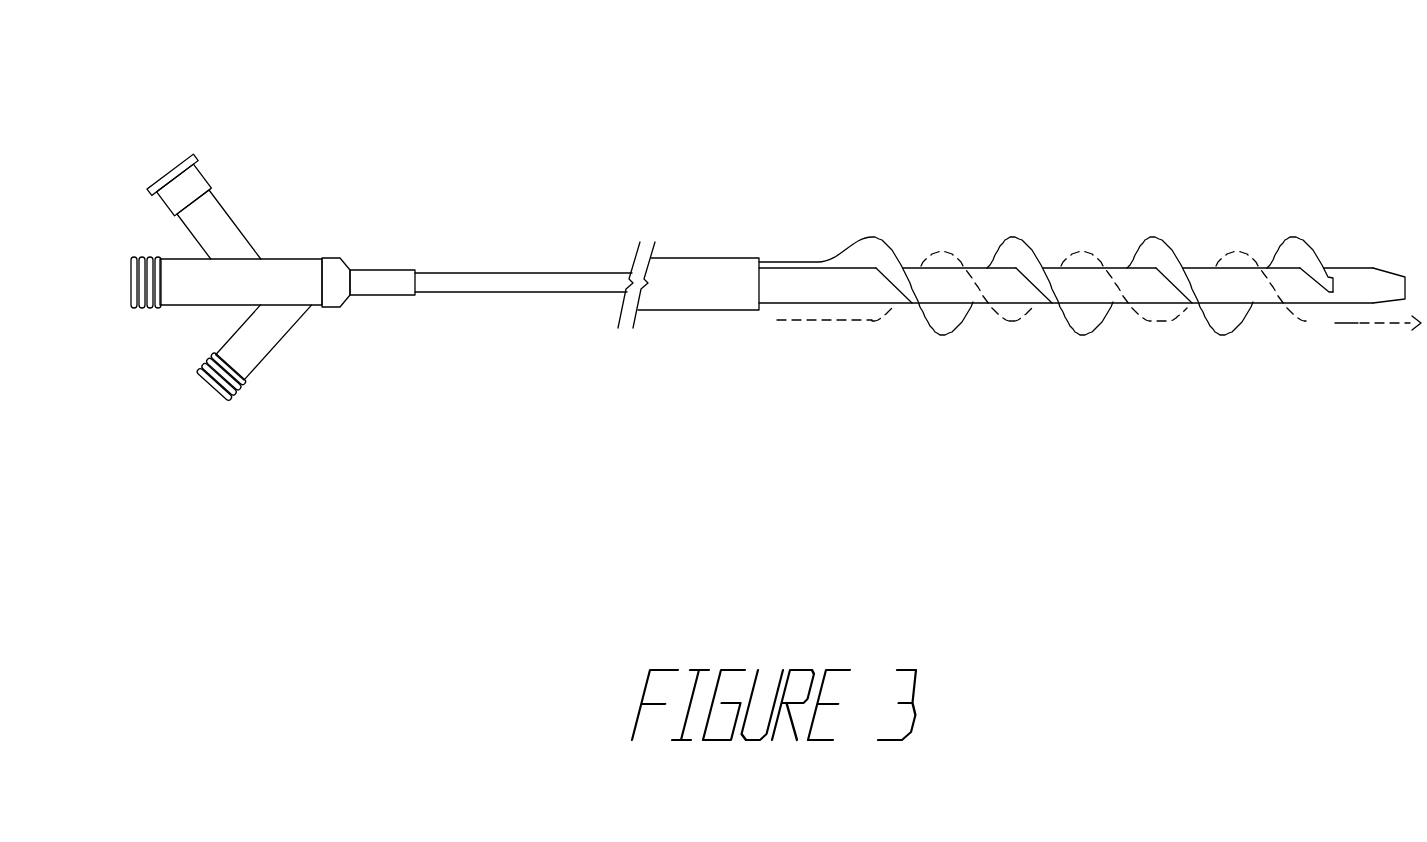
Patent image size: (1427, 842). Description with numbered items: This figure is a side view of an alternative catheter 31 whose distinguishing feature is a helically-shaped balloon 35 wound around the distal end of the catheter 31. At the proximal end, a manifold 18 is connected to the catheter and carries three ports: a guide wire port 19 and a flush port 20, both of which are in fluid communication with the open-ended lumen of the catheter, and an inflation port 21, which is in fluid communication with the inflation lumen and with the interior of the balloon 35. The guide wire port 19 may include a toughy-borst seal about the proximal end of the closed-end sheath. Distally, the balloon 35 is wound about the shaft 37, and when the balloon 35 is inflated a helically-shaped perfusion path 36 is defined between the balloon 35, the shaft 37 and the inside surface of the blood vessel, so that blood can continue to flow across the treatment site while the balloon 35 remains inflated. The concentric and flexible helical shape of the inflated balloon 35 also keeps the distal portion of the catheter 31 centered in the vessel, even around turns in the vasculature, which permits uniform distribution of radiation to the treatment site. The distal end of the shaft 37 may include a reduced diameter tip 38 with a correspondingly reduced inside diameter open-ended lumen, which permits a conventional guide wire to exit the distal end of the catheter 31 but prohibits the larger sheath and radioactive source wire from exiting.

The manifold 18 is at (381, 276).
The guide wire port 19 is at (170, 307).
The flush port 20 is at (216, 205).
The inflation port 21 is at (270, 347).
The alternative catheter 31 is at (1029, 231).
The helically-shaped balloon 35 is at (1092, 336).
The helically-shaped perfusion path 36 is at (1335, 324).
The shaft 37 is at (1081, 266).
The reduced diameter tip 38 is at (1393, 270).